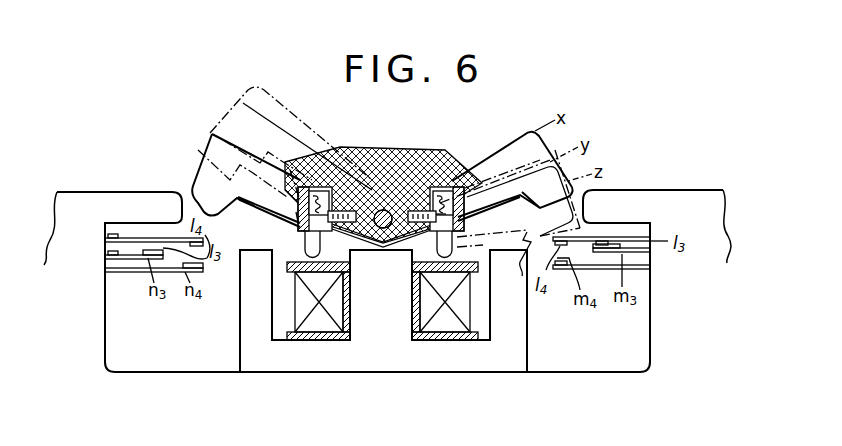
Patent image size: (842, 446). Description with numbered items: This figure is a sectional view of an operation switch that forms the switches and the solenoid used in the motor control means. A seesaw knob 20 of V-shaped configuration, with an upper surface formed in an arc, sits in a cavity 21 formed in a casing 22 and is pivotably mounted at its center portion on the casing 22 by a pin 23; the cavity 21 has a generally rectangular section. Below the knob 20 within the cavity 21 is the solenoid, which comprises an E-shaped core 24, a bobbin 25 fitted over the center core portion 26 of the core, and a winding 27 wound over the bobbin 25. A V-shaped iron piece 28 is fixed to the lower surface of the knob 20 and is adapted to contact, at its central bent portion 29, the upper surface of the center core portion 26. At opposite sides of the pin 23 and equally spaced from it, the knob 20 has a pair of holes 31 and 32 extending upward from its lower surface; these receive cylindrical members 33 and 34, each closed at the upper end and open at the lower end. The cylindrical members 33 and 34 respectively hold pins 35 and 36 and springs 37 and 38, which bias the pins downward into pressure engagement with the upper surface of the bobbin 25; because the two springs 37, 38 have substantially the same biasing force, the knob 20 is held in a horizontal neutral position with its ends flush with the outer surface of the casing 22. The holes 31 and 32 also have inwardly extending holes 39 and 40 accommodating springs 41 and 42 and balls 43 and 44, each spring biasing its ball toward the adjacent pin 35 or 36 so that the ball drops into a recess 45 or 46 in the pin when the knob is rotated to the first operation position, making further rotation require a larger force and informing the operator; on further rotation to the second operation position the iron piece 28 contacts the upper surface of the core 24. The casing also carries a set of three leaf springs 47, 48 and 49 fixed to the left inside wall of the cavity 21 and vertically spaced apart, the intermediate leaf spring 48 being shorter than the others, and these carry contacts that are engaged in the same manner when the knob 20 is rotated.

The seesaw knob 20 is at (198, 185).
The cavity 21 is at (652, 318).
The casing 22 is at (678, 193).
The pin 23 is at (395, 200).
The E-shaped core 24 is at (327, 366).
The bobbin 25 is at (300, 340).
The center core portion 26 is at (396, 340).
The winding 27 is at (330, 328).
The V-shaped iron piece 28 is at (252, 205).
The central bent portion 29 is at (383, 244).
The hole 31 is at (320, 189).
The hole 32 is at (458, 186).
The cylindrical member 33 is at (305, 186).
The cylindrical member 34 is at (465, 177).
The pin 35 is at (256, 295).
The pin 36 is at (508, 295).
The spring 37 is at (297, 216).
The spring 38 is at (475, 212).
The inwardly extending hole 39 is at (383, 210).
The inwardly extending hole 40 is at (442, 189).
The spring 41 is at (388, 212).
The spring 42 is at (414, 210).
The ball 43 is at (346, 210).
The ball 44 is at (436, 208).
The recess 45 is at (330, 250).
The recess 46 is at (428, 244).
The leaf spring 47 is at (107, 239).
The leaf spring 48 is at (108, 256).
The leaf spring 49 is at (105, 284).